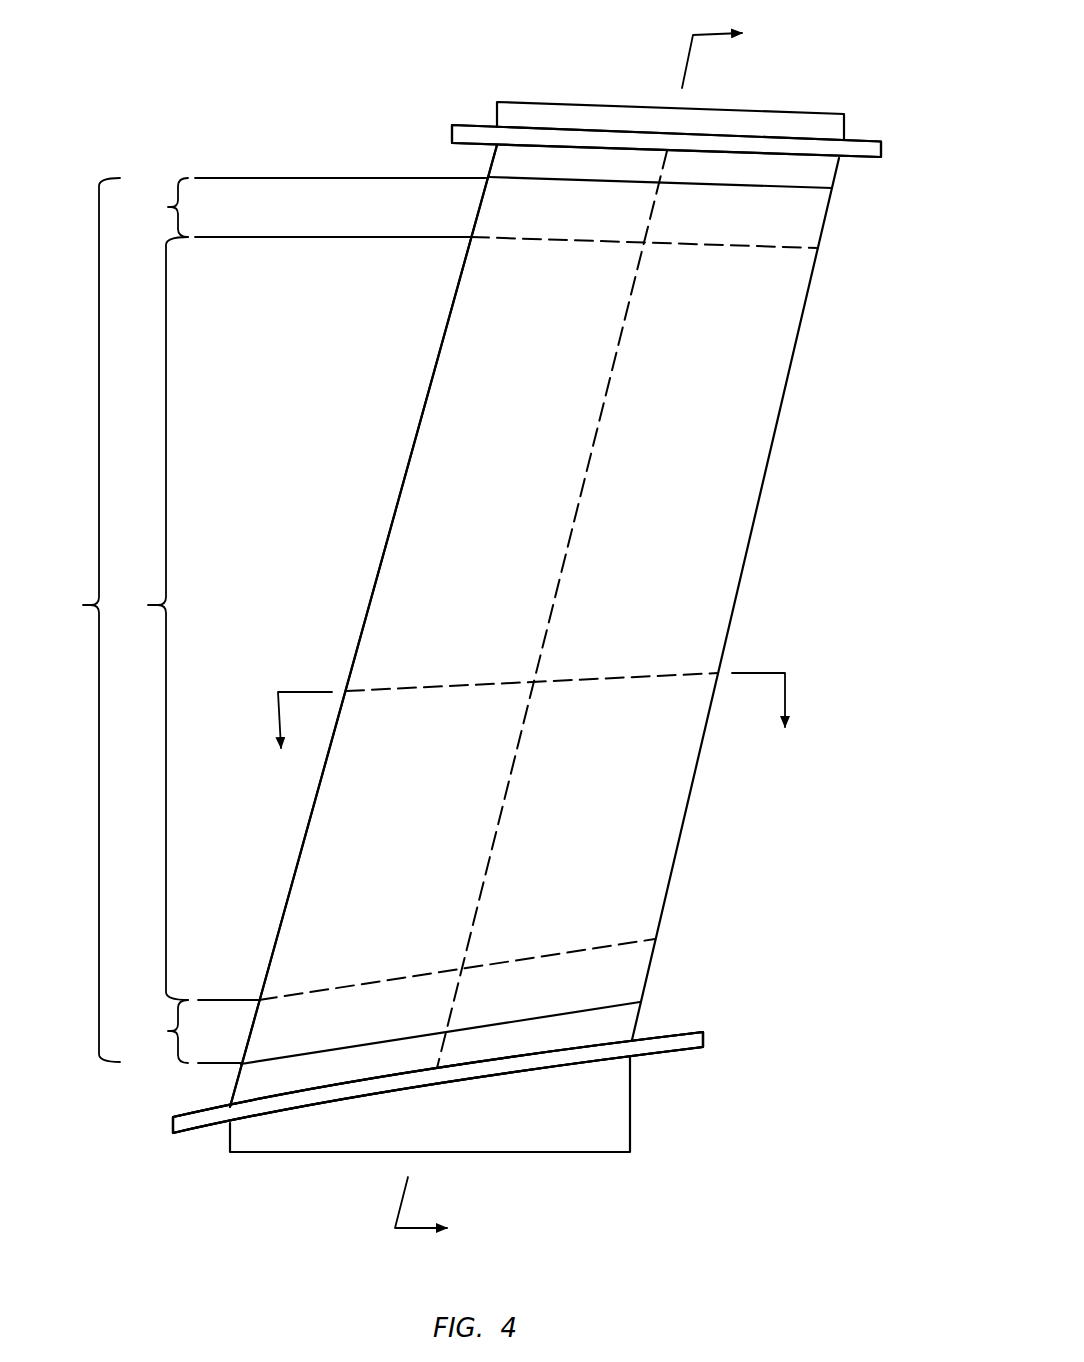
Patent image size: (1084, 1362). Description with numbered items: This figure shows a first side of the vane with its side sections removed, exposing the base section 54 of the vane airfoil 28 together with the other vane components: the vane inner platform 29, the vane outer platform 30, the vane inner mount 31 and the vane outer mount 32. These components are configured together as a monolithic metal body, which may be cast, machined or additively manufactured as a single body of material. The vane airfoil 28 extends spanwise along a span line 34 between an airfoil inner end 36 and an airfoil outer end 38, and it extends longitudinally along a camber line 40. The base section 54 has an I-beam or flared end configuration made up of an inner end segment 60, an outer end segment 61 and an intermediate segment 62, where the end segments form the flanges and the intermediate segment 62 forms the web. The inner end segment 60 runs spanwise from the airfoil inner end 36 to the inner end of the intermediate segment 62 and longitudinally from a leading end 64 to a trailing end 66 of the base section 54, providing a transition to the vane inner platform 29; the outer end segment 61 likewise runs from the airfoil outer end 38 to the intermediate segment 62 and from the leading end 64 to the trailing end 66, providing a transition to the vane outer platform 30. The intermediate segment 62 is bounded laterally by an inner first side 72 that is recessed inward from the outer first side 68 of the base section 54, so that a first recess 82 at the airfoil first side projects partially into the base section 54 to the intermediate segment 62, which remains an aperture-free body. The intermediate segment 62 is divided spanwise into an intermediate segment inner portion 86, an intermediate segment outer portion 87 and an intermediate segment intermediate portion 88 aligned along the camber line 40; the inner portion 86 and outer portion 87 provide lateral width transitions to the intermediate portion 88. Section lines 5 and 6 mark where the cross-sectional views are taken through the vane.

The vane airfoil 28 is at (506, 625).
The vane inner platform 29 is at (714, 1034).
The vane outer platform 30 is at (894, 147).
The vane inner mount 31 is at (639, 1118).
The vane outer mount 32 is at (826, 109).
The span line 34 is at (588, 467).
The airfoil inner end 36 is at (295, 1088).
The airfoil outer end 38 is at (561, 145).
The camber line 40 is at (598, 682).
The base section 54 is at (372, 542).
The inner end segment 60 is at (217, 1083).
The outer end segment 61 is at (477, 162).
The intermediate segment 62 is at (83, 620).
The leading end 64 is at (397, 463).
The trailing end 66 is at (765, 483).
The outer first side 68 is at (267, 1082).
The inner first side 72 is at (365, 882).
The first recess 82 is at (496, 335).
The intermediate segment inner portion 86 is at (194, 1031).
The intermediate segment outer portion 87 is at (308, 207).
The intermediate segment intermediate portion 88 is at (149, 618).
The section line 5- 5 is at (580, 633).
The section line 6- 6 is at (534, 729).